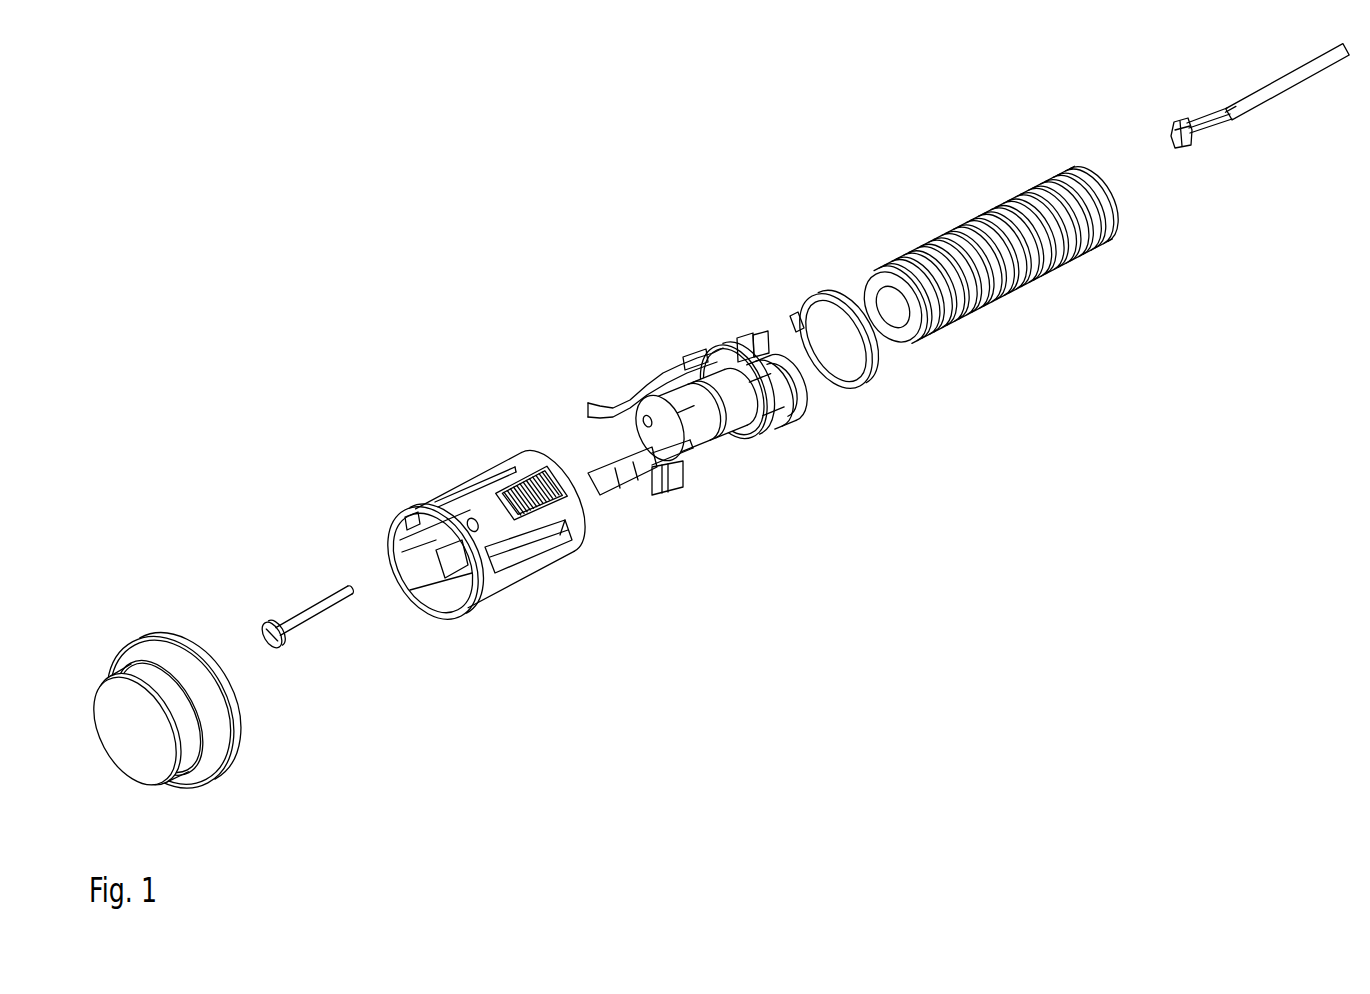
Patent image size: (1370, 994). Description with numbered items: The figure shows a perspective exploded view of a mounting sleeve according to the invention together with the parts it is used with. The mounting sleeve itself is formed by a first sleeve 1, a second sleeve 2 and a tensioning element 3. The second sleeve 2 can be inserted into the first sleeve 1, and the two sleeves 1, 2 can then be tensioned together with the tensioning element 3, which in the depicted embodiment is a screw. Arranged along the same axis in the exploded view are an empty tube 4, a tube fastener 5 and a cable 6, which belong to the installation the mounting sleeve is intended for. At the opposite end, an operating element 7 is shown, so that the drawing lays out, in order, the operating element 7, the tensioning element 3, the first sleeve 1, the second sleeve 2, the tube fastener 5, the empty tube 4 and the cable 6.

The first sleeve 1 is at (472, 495).
The second sleeve 2 is at (702, 357).
The tensioning element 3 is at (322, 600).
The empty tube 4 is at (1023, 265).
The tube fastener 5 is at (868, 372).
The cable 6 is at (1257, 94).
The operating element 7 is at (227, 762).